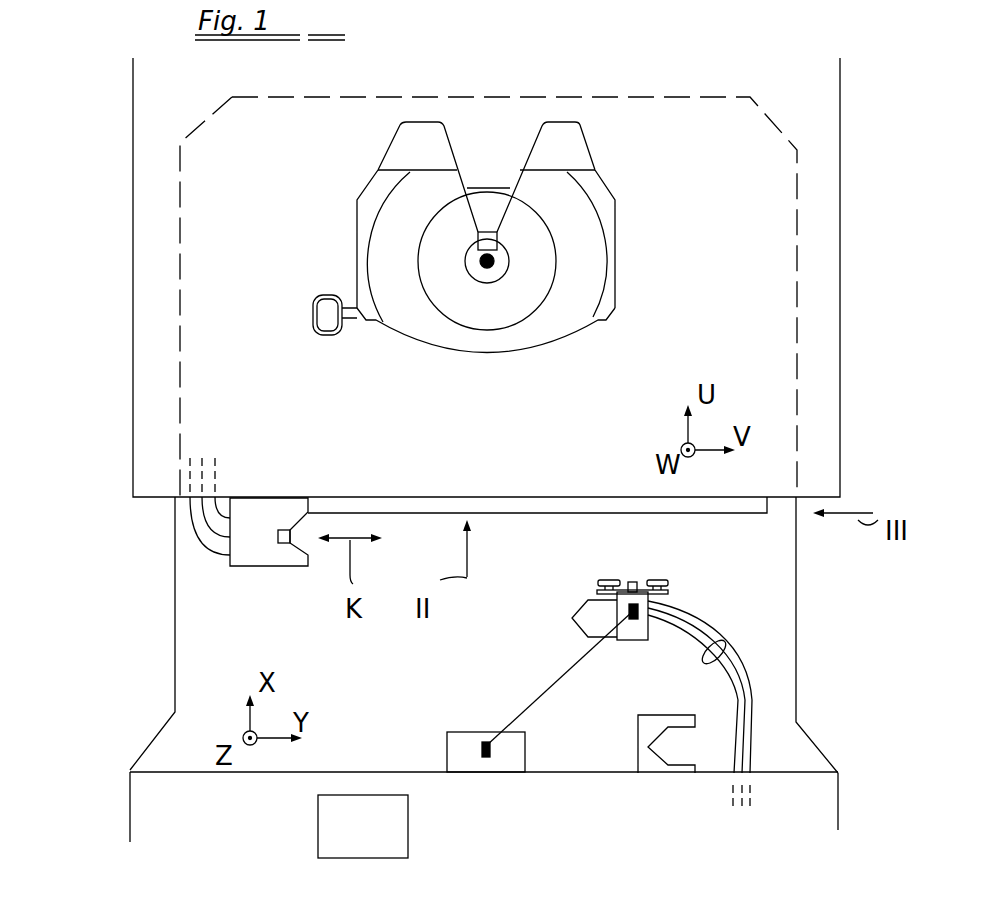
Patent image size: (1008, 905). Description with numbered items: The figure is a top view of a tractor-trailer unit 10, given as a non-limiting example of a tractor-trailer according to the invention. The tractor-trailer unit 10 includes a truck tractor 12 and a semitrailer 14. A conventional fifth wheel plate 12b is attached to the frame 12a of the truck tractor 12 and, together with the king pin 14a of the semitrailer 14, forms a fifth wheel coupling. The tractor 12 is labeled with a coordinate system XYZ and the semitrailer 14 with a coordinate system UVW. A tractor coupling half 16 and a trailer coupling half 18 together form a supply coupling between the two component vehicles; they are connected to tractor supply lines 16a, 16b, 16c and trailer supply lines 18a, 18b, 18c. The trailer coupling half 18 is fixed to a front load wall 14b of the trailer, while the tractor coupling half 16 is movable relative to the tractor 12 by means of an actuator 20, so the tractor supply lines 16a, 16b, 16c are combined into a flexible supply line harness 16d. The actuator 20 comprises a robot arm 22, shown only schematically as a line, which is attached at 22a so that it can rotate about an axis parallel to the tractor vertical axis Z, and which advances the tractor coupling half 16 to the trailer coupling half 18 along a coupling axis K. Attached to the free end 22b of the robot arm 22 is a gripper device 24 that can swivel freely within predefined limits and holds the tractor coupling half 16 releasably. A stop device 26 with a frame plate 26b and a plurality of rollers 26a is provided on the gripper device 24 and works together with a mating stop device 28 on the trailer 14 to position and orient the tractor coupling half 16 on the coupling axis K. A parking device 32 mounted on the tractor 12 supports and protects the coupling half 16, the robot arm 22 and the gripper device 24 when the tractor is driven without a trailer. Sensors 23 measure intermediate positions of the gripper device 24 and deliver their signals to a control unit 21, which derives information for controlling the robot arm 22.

The tractor-trailer unit 10 is at (124, 610).
The truck tractor 12 is at (130, 822).
The frame 12a is at (797, 304).
The fifth wheel plate 12b is at (613, 198).
The semitrailer 14 is at (132, 212).
The king pin 14a is at (486, 268).
The front load wall 14b is at (386, 500).
The tractor coupling half 16 is at (590, 612).
The tractor supply line 16a is at (748, 678).
The tractor supply line 16b is at (752, 700).
The tractor supply line 16c is at (753, 729).
The flexible supply line harness 16d is at (720, 650).
The trailer coupling half 18 is at (262, 553).
The trailer supply line 18a is at (190, 472).
The trailer supply line 18b is at (203, 497).
The trailer supply line 18c is at (192, 535).
The actuator 20 is at (510, 689).
The control unit 21 is at (385, 848).
The robot arm 22 is at (553, 688).
The attachment point of robot arm 22a is at (488, 758).
The free end of robot arm 22b is at (636, 640).
The sensors 23 is at (285, 530).
The gripper device 24 is at (650, 598).
The stop device 26 is at (677, 571).
The rollers 26a is at (609, 580).
The frame plate 26b is at (652, 578).
The mating stop device 28 is at (563, 502).
The parking device 32 is at (648, 768).